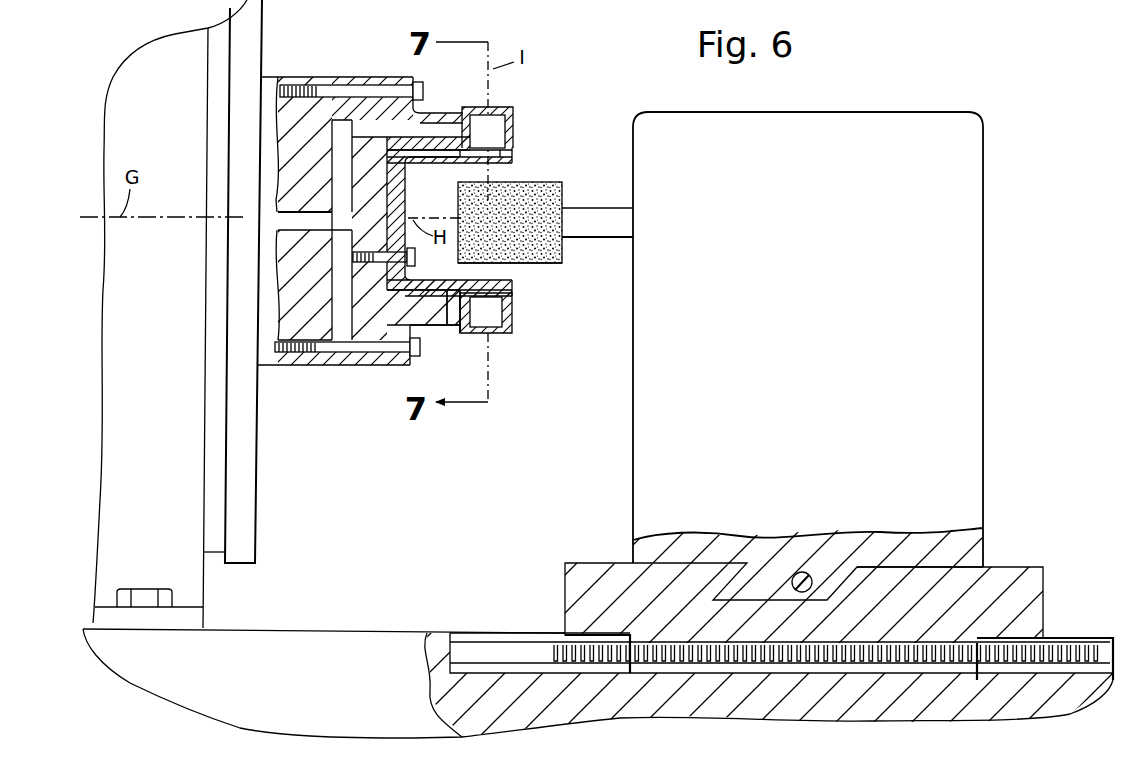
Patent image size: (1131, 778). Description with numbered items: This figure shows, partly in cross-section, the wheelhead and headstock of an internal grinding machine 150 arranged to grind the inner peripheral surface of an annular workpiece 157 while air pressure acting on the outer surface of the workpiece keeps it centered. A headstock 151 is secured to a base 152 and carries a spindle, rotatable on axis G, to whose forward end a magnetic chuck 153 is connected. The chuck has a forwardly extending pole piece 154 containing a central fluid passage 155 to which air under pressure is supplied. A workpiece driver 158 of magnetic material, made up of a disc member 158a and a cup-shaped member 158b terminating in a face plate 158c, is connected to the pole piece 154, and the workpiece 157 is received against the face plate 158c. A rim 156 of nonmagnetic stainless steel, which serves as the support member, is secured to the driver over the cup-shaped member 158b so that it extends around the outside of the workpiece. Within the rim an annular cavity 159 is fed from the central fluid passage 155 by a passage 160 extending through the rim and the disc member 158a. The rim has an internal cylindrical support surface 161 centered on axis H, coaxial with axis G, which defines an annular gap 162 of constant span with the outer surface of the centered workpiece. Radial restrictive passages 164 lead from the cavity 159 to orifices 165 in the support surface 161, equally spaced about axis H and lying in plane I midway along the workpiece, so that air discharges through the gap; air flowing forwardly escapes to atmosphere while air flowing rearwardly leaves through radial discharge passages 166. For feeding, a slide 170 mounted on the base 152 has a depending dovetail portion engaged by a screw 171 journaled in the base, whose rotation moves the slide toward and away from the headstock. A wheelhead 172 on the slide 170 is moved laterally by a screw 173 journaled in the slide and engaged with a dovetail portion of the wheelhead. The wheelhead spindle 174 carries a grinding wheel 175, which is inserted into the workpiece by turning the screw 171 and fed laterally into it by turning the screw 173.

The internal grinding machine 150 is at (103, 700).
The headstock 151 is at (208, 588).
The base 152 is at (305, 628).
The magnetic chuck 153 is at (258, 525).
The pole piece 154 is at (297, 366).
The central fluid passage 155 is at (305, 211).
The rim 156 is at (509, 107).
The workpiece 157 is at (506, 262).
The workpiece driver 158 is at (409, 179).
The disc member 158a is at (357, 77).
The cup-shaped member 158b is at (418, 279).
The face plate 158c is at (482, 280).
The annular cavity 159 is at (496, 130).
The passage 160 is at (345, 136).
The internal cylindrical support surface 161 is at (513, 161).
The annular gap 162 is at (513, 153).
The restrictive passages 164 is at (486, 313).
The orifices 165 is at (510, 222).
The radial discharge passages 166 is at (456, 330).
The slide 170 is at (568, 562).
The screw 171 is at (510, 667).
The wheelhead 172 is at (633, 400).
The screw 173 is at (806, 572).
The spindle 174 is at (609, 240).
The grinding wheel 175 is at (550, 265).